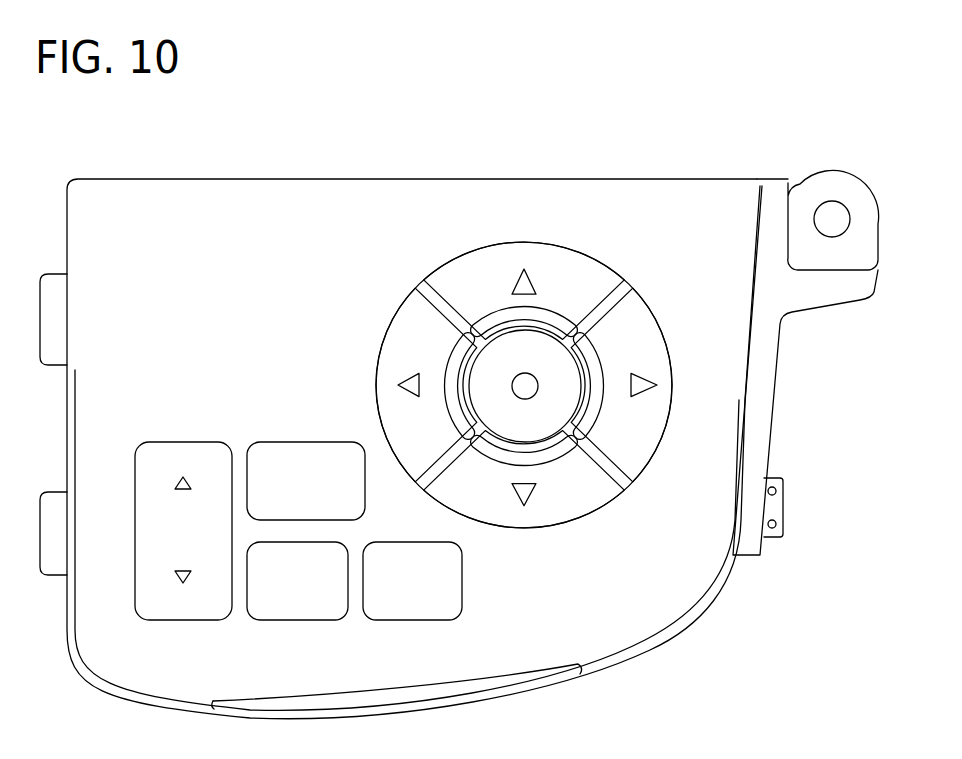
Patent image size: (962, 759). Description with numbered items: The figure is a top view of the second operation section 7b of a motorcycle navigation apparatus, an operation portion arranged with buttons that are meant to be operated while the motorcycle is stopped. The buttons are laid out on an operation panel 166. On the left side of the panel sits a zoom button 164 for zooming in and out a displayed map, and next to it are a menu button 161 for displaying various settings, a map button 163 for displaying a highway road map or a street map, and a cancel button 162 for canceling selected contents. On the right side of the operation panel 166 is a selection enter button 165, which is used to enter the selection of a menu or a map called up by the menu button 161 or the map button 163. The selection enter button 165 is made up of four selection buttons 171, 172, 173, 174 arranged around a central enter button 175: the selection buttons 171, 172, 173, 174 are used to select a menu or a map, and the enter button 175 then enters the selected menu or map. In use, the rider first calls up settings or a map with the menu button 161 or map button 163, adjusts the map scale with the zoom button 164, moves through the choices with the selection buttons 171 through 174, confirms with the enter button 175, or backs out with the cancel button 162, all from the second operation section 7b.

The second operation section 7b is at (418, 158).
The menu button 161 is at (302, 442).
The cancel button 162 is at (455, 562).
The map button 163 is at (308, 607).
The zoom button 164 is at (183, 442).
The selection enter button 165 is at (511, 315).
The operation panel 166 is at (710, 197).
The selection button 171 is at (524, 290).
The selection button 172 is at (524, 479).
The selection button 173 is at (426, 385).
The selection button 174 is at (621, 385).
The enter button 175 is at (566, 406).